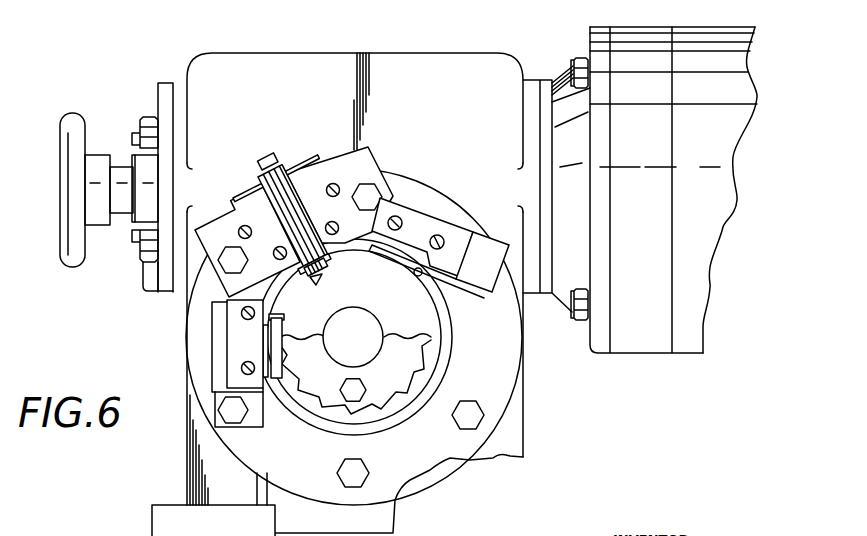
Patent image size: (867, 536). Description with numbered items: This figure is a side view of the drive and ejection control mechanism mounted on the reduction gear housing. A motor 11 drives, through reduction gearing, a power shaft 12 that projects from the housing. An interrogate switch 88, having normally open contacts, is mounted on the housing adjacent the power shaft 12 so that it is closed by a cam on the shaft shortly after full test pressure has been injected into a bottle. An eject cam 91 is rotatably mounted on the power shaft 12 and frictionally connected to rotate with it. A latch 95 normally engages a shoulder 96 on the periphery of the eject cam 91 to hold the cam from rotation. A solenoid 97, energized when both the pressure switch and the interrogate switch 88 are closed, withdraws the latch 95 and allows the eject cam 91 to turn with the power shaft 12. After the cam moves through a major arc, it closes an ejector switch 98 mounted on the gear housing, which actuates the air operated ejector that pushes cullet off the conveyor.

The motor 11 is at (725, 223).
The power shaft 12 is at (372, 342).
The interrogate switch 88 is at (228, 338).
The eject cam 91 is at (376, 317).
The latch 95 is at (310, 277).
The shoulder 96 is at (343, 267).
The solenoid 97 is at (247, 208).
The ejector switch 98 is at (432, 218).